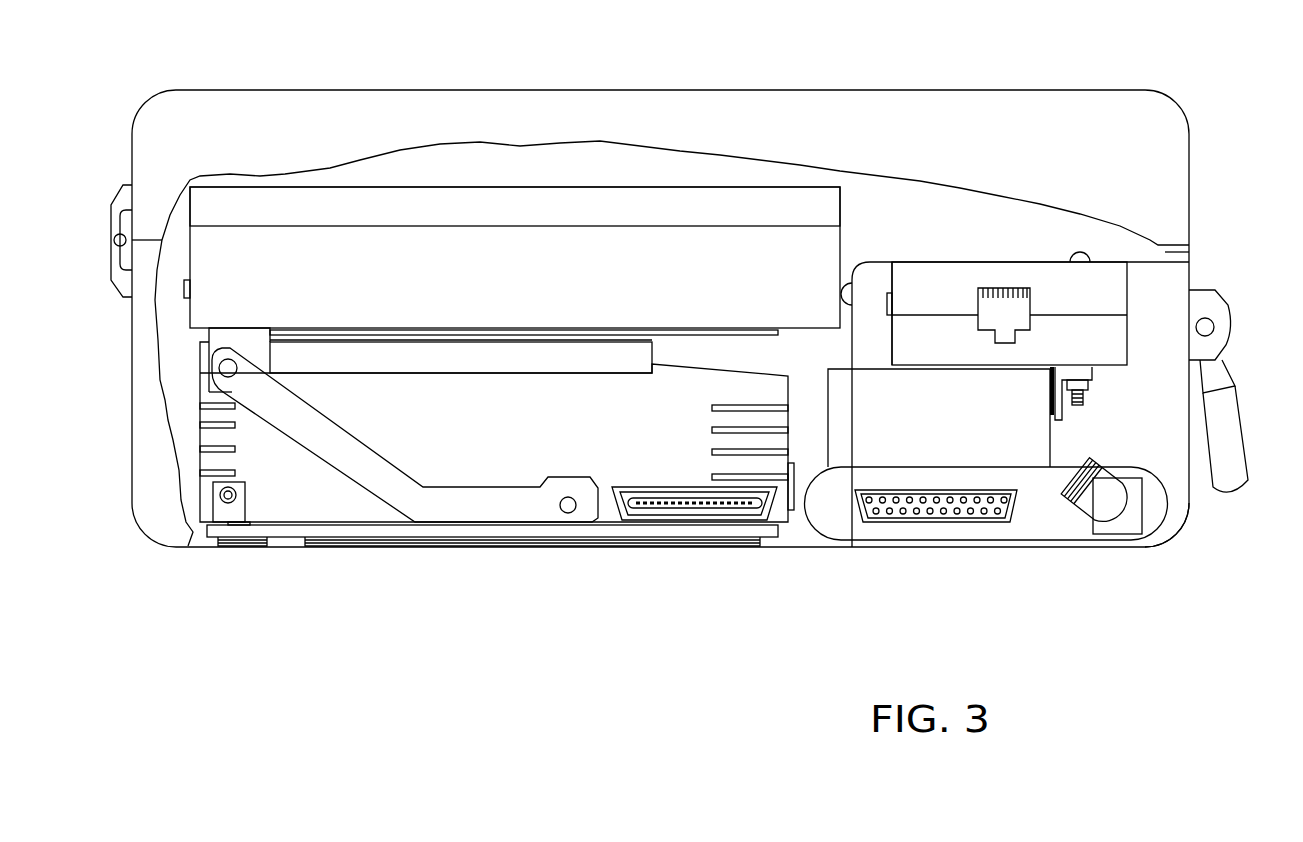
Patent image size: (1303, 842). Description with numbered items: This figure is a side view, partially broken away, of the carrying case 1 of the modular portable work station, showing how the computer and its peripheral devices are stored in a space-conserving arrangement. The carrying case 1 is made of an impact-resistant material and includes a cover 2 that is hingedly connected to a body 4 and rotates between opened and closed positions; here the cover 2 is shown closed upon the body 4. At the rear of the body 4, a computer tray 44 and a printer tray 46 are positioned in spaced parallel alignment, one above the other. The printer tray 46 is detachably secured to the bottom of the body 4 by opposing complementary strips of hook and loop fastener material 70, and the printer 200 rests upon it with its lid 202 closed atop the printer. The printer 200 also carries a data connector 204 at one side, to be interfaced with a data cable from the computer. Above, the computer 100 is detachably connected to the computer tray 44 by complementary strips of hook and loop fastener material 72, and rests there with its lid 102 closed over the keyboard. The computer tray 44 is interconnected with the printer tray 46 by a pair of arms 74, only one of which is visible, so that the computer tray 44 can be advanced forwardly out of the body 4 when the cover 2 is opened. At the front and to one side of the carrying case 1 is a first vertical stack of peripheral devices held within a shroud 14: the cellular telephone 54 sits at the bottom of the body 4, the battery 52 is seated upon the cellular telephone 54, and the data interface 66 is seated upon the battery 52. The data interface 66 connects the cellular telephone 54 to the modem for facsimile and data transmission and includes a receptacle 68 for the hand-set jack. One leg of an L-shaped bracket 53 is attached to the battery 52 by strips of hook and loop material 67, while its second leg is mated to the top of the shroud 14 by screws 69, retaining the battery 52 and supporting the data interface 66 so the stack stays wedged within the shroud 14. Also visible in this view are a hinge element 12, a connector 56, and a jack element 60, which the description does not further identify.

The carrying case 1 is at (997, 74).
The cover 2 is at (1158, 88).
The body 4 is at (1170, 545).
The hinge 12 is at (1228, 460).
The shroud 14 is at (970, 262).
The computer tray 44 is at (505, 335).
The printer tray 46 is at (628, 530).
The battery 52 is at (1025, 448).
The L-shaped bracket 53 is at (1058, 413).
The cellular telephone 54 is at (1038, 520).
The connector 56 is at (960, 506).
The power jack 60 is at (1120, 503).
The data interface 66 is at (920, 290).
The strips of hook and loop material 67 is at (1050, 393).
The receptacle 68 is at (996, 288).
The screws 69 is at (1078, 256).
The strips of hook and loop fastener material 70 is at (490, 536).
The strips of hook and loop fastener material 72 is at (608, 330).
The arms 74 is at (395, 488).
The computer 100 is at (487, 270).
The lid 102 is at (248, 212).
The printer 200 is at (330, 483).
The lid 202 is at (325, 357).
The data connector 204 is at (700, 507).